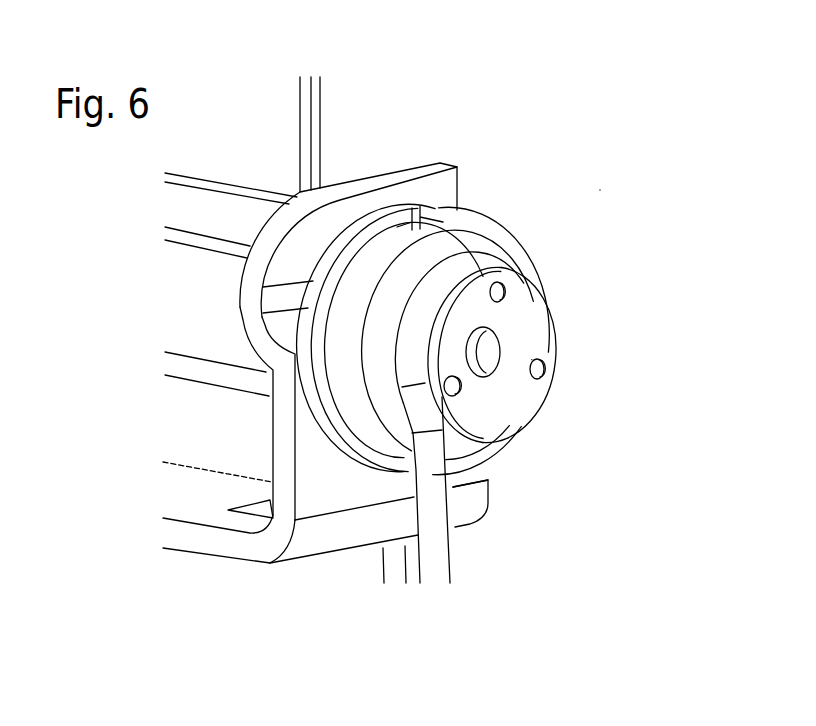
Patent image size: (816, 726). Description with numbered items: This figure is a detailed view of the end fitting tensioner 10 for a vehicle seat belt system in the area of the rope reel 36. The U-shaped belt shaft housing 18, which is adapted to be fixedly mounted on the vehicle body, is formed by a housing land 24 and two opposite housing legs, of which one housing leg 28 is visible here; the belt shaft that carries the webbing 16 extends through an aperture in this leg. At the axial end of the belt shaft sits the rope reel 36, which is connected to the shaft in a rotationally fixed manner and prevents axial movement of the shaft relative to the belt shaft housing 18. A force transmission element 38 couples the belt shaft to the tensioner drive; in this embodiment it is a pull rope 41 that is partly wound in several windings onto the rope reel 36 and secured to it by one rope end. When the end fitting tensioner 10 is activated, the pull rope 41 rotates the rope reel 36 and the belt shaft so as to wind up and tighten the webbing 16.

The end fitting tensioner 10 is at (600, 190).
The webbing 16 is at (277, 125).
The belt shaft housing 18 is at (311, 563).
The housing land 24 is at (207, 543).
The housing leg 28 is at (443, 192).
The rope reel 36 is at (540, 325).
The force transmission element 38 is at (440, 508).
The pull rope 41 is at (500, 483).